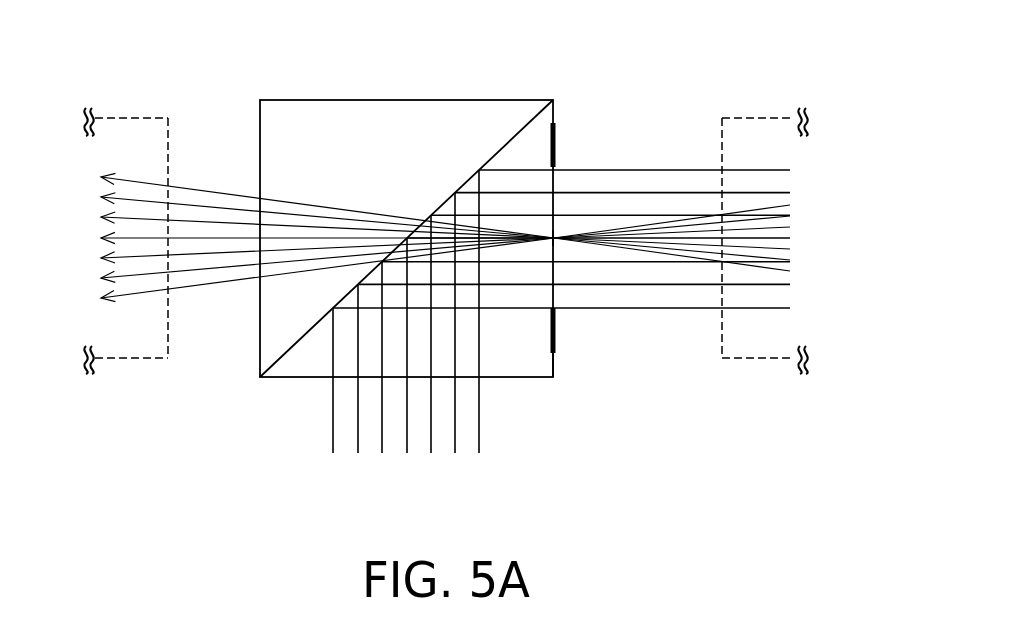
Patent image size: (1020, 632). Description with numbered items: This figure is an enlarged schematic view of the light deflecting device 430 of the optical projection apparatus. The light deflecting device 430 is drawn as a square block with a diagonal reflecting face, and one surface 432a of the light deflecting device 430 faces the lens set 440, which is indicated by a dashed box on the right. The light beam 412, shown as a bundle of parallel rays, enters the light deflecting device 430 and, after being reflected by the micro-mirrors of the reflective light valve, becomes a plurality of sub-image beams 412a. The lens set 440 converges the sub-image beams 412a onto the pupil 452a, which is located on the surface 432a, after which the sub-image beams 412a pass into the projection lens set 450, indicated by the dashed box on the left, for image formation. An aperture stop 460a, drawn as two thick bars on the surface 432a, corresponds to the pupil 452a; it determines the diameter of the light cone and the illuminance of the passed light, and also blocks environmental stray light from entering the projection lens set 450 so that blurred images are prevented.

The light deflecting device 430 is at (437, 99).
The light beam 412 is at (432, 435).
The sub-image beams 412a is at (308, 237).
The projection lens set 450 is at (132, 118).
The lens set 440 is at (758, 118).
The aperture stop 460a is at (568, 146).
The pupil 452a is at (558, 232).
The surface of the light deflecting device 432a is at (572, 367).